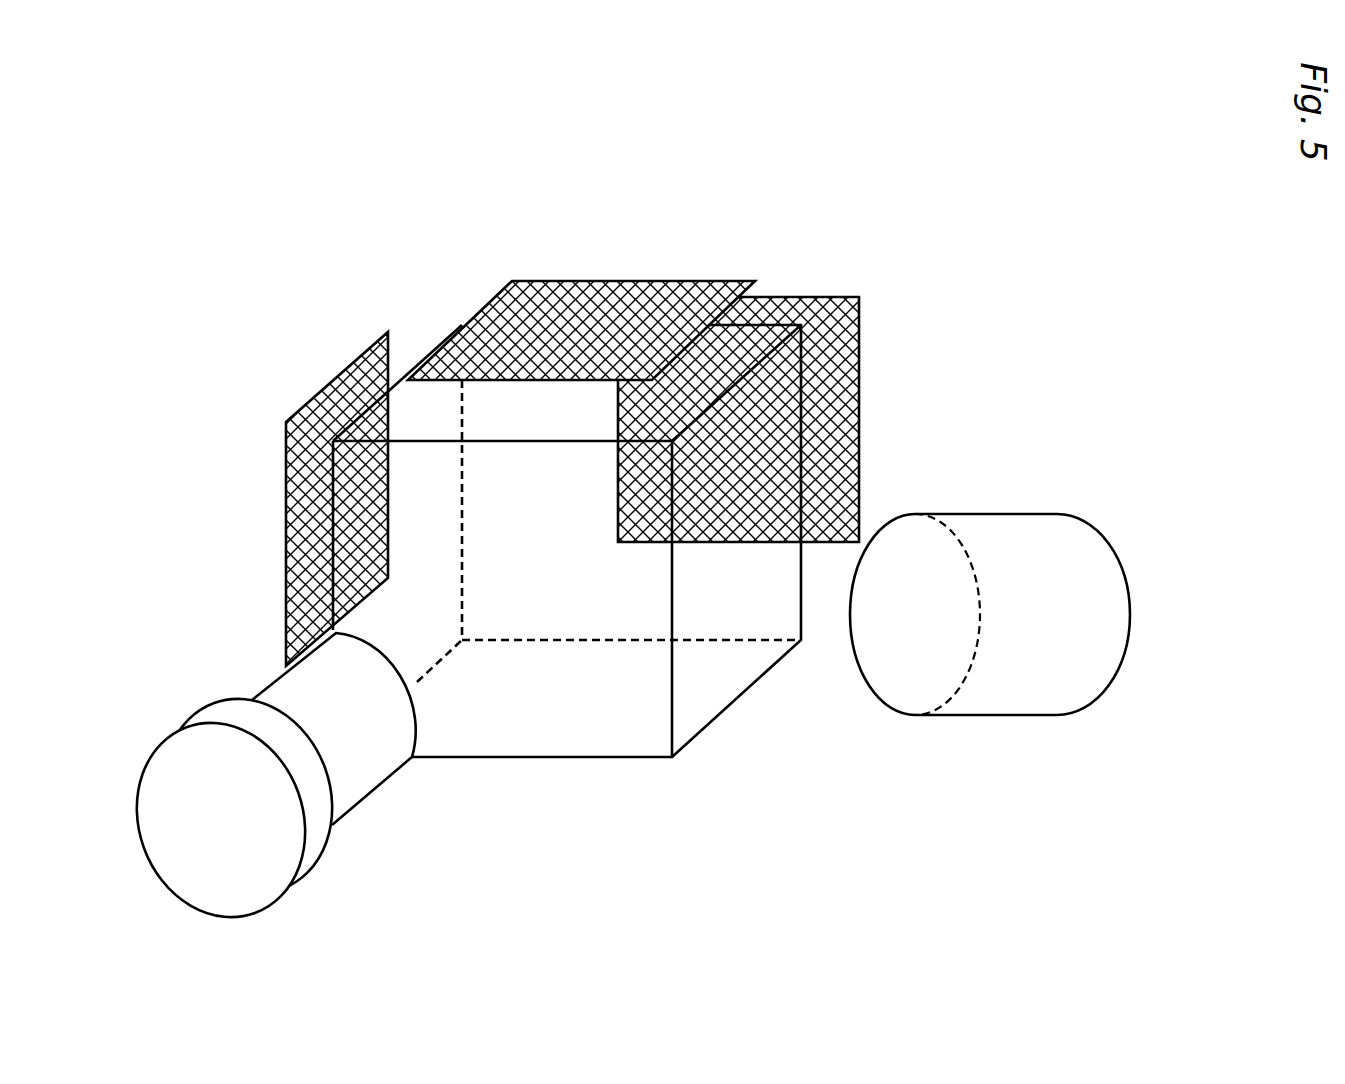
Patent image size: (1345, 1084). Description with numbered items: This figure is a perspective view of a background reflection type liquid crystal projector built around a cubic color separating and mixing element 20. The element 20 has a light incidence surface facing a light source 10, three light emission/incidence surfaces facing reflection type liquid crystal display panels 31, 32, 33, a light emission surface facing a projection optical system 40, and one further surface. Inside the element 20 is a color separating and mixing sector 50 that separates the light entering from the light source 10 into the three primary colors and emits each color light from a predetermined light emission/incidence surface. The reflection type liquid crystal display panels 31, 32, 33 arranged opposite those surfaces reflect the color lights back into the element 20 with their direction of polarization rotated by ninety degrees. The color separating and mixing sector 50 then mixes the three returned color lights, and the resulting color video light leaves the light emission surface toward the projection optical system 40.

The light source 10 is at (982, 517).
The color separating and mixing element 20 is at (550, 488).
The color separating and mixing sector 50 is at (550, 488).
The reflection type liquid crystal display panel 31 is at (292, 527).
The reflection type liquid crystal display panel 32 is at (783, 297).
The reflection type liquid crystal display panel 33 is at (643, 283).
The projection optical system 40 is at (142, 817).